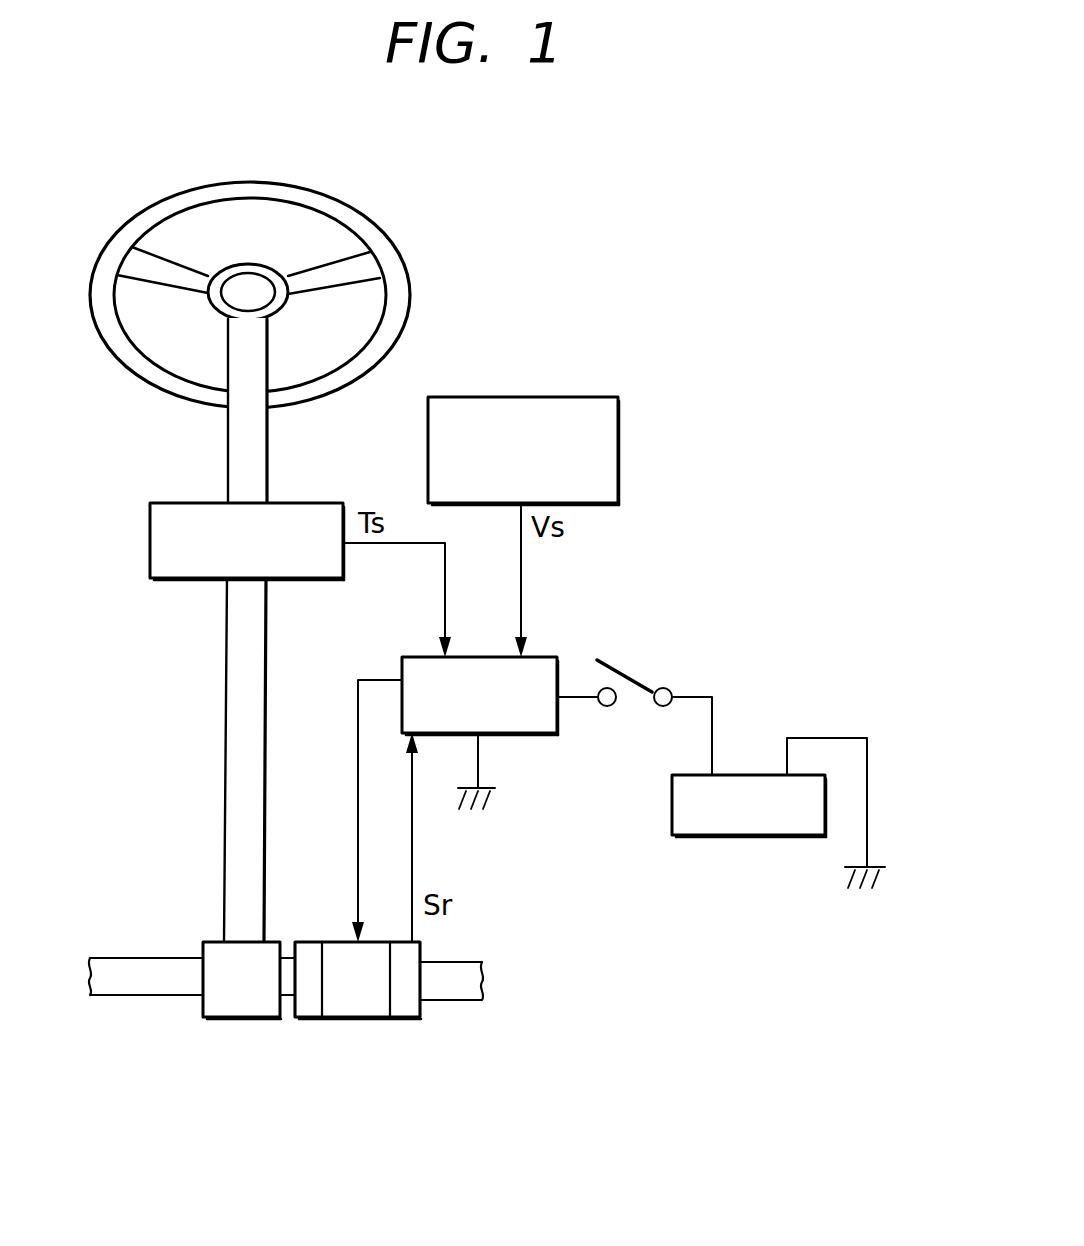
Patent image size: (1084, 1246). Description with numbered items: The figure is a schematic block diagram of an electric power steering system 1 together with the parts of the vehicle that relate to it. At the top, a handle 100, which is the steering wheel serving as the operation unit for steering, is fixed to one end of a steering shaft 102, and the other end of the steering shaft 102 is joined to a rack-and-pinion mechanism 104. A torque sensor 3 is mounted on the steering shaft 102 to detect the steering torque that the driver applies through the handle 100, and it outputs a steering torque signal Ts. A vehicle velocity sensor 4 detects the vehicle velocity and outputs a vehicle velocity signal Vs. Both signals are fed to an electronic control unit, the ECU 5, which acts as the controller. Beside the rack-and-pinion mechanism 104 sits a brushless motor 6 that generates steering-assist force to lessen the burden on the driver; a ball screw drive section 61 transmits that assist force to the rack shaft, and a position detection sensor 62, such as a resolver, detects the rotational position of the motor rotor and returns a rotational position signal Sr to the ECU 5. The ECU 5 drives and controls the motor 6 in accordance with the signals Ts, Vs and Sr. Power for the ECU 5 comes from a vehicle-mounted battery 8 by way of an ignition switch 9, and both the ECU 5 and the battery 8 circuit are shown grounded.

The electric power steering system 1 is at (649, 214).
The handle (steering wheel) 100 is at (356, 206).
The steering shaft 102 is at (228, 460).
The torque sensor 3 is at (150, 537).
The vehicle velocity sensor 4 is at (575, 397).
The electronic control unit (ECU) 5 is at (546, 657).
The brushless motor 6 is at (354, 1028).
The ball screw drive section 61 is at (311, 1012).
The position detection sensor 62 is at (405, 1012).
The vehicle-mounted battery 8 is at (672, 805).
The ignition switch 9 is at (645, 660).
The rack-and-pinion mechanism 104 is at (234, 1012).